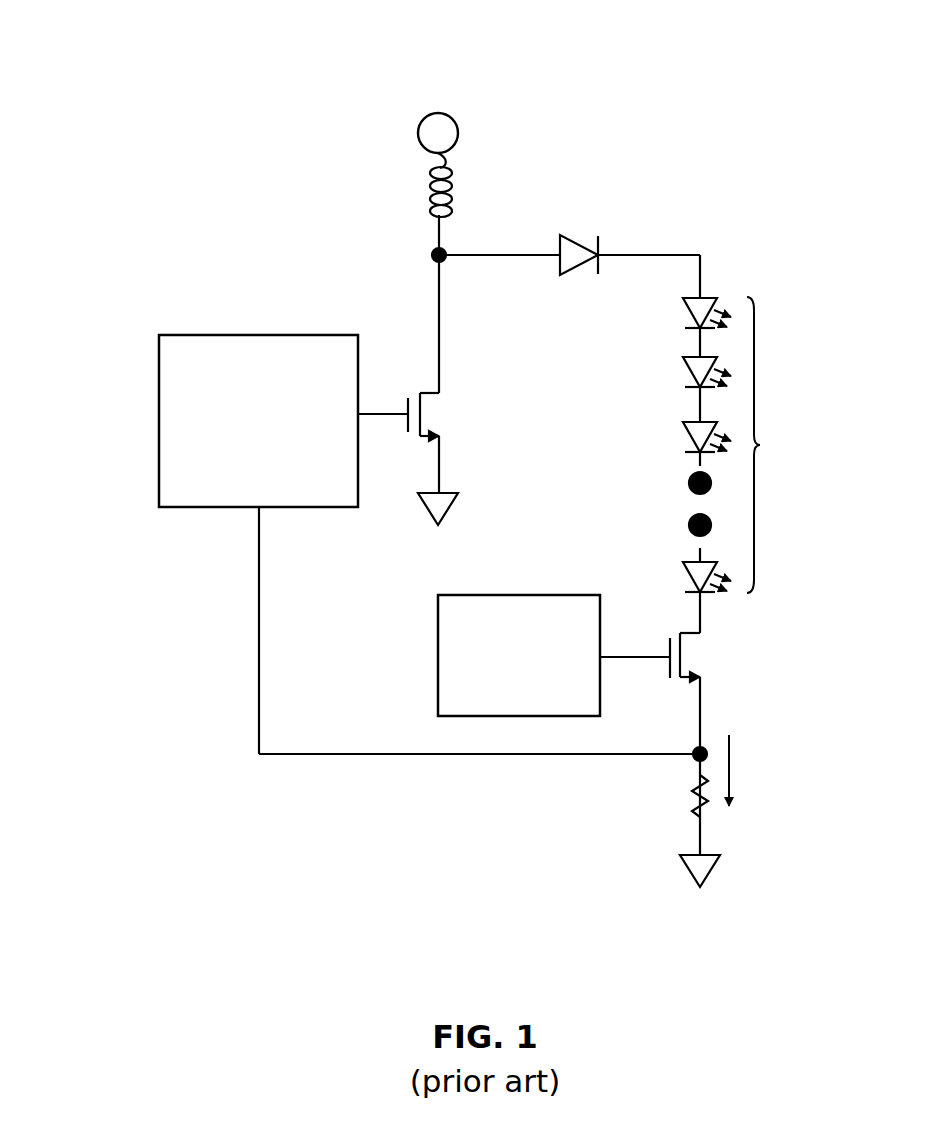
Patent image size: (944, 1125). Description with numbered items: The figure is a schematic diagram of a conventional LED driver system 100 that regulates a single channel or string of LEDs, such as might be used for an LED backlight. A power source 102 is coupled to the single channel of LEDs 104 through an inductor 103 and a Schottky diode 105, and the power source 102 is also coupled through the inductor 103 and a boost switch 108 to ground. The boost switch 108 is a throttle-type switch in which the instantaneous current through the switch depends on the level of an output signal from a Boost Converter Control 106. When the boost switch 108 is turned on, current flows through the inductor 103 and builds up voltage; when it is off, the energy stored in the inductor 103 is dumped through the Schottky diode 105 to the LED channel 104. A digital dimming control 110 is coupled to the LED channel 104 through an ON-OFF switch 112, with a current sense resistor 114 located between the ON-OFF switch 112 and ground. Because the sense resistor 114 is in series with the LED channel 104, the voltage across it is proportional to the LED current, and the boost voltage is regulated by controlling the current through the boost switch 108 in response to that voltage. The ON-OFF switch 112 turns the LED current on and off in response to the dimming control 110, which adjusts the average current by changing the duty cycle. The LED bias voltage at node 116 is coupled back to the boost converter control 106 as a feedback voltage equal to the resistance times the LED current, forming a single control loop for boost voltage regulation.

The LED driver system 100 is at (61, 30).
The power source 102 is at (458, 132).
The inductor 103 is at (452, 198).
The LED channel 104 is at (760, 445).
The Schottky diode 105 is at (575, 233).
The boost converter control 106 is at (268, 334).
The boost switch 108 is at (453, 375).
The digital dimming control 110 is at (507, 595).
The ON-OFF switch 112 is at (693, 645).
The current sense resistor 114 is at (662, 800).
The node 116 is at (705, 749).